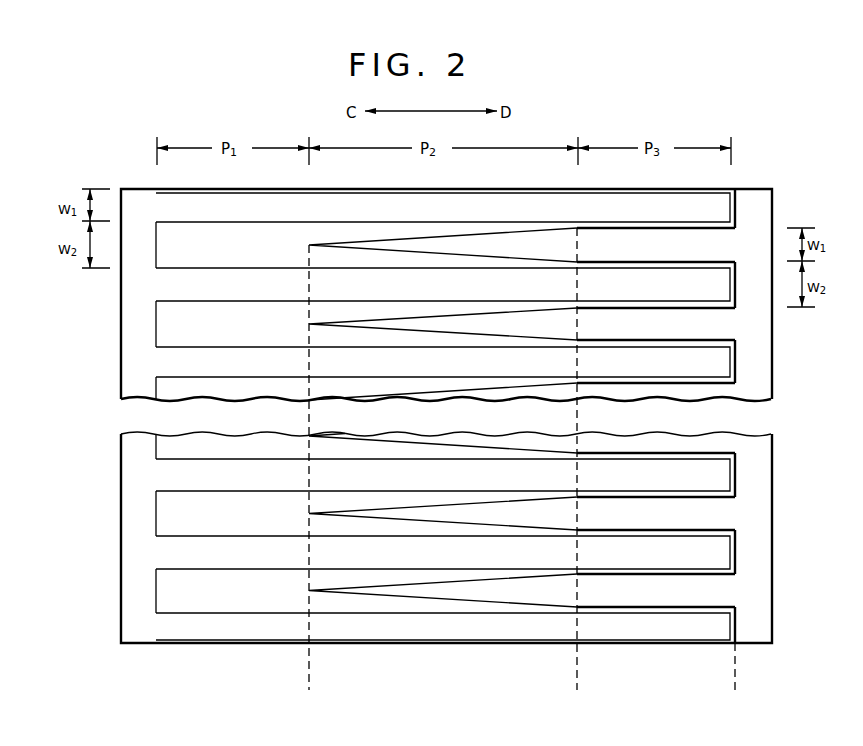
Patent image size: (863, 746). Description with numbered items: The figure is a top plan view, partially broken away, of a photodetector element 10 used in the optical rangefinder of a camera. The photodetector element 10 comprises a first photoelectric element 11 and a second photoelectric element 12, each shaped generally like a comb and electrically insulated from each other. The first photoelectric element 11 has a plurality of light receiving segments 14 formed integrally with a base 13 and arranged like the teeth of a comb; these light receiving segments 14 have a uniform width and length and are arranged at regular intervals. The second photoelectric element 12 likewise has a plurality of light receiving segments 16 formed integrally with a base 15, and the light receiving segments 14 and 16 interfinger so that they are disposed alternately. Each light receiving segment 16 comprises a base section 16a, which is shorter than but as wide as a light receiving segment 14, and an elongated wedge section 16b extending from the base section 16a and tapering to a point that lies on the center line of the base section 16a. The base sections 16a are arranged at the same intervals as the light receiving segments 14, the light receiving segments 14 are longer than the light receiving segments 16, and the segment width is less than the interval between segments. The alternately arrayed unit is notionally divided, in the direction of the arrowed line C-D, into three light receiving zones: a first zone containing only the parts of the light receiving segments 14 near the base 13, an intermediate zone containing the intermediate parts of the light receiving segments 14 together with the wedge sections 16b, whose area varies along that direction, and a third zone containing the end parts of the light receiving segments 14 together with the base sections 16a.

The photodetector element 10 is at (756, 180).
The first photoelectric element 11 is at (391, 440).
The second photoelectric element 12 is at (578, 448).
The base 13 is at (120, 470).
The light receiving segments 14 is at (275, 212).
The base 15 is at (774, 483).
The light receiving segments 16 is at (522, 451).
The base section 16a is at (735, 682).
The elongated wedge section 16b is at (443, 467).